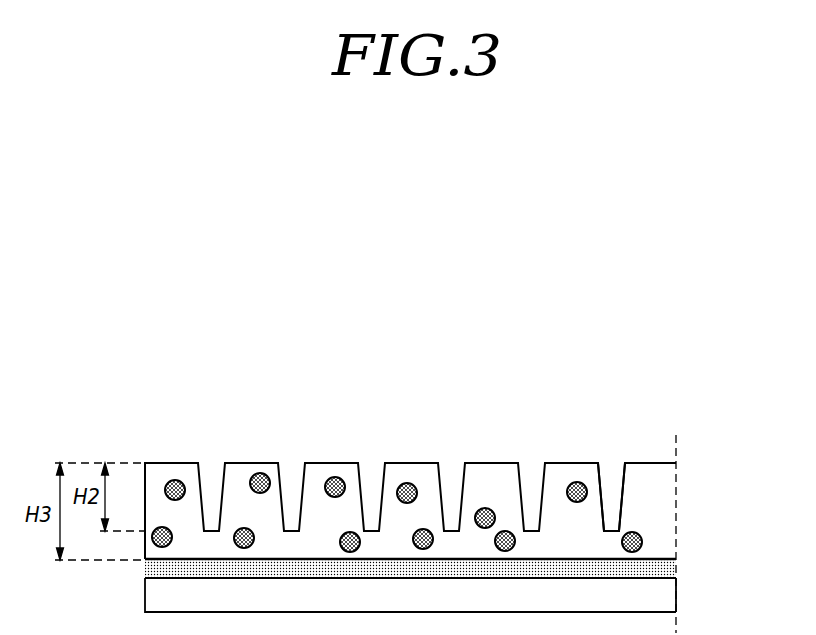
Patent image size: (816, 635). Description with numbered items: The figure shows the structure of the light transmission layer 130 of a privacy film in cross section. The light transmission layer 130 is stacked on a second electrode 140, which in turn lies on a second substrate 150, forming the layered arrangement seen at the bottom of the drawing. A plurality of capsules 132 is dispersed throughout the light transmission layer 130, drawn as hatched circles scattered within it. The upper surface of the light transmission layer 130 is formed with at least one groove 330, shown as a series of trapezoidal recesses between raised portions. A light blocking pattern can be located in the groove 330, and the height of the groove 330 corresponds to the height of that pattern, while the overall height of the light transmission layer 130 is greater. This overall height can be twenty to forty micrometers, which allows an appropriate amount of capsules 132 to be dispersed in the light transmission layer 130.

The light transmission layer 130 is at (665, 511).
The capsules 132 is at (577, 482).
The second electrode 140 is at (667, 568).
The second substrate 150 is at (667, 592).
The groove 330 is at (611, 458).